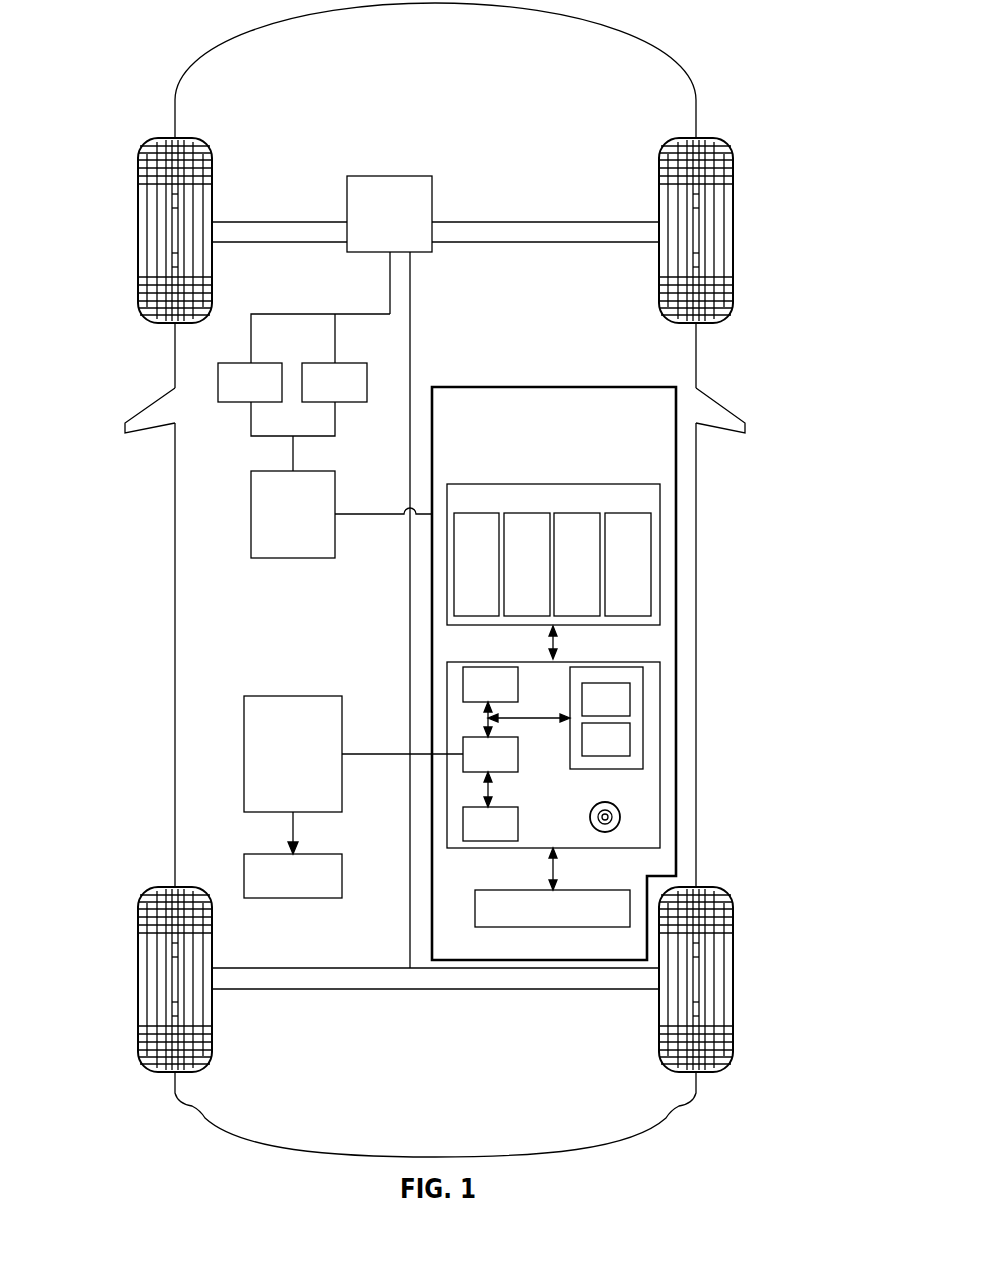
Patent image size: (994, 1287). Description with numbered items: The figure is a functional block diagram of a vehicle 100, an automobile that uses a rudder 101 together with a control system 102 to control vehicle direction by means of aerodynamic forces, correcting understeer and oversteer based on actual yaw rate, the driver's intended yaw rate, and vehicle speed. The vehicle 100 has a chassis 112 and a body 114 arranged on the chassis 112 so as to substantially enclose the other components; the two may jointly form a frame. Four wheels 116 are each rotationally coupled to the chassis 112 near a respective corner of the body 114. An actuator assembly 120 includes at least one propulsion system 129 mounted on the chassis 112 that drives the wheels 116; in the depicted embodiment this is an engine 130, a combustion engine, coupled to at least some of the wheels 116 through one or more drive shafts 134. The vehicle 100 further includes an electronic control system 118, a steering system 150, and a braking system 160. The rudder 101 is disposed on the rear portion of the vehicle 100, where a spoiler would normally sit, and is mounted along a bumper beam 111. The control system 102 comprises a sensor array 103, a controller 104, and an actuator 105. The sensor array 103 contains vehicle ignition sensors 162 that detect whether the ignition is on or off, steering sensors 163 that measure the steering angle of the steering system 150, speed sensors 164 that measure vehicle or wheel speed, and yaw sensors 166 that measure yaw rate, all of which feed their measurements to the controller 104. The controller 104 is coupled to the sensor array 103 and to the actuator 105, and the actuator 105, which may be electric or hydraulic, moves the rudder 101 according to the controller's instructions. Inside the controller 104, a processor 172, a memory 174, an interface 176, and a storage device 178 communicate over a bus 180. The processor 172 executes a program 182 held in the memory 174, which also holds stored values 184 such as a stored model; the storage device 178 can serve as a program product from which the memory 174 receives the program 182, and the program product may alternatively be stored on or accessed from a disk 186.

The vehicle 100 is at (749, 26).
The rudder 101 is at (253, 750).
The control system 102 is at (627, 386).
The sensor array 103 is at (553, 484).
The controller 104 is at (606, 662).
The actuator 105 is at (582, 890).
The bumper beam 111 is at (253, 877).
The chassis 112 is at (410, 913).
The body 114 is at (175, 588).
The wheels 116 is at (137, 233).
The electronic control system 118 is at (251, 514).
The actuator assembly 120 is at (436, 284).
The propulsion system 129 is at (415, 176).
The engine 130 is at (388, 209).
The drive shafts 134 is at (265, 244).
The steering system 150 is at (238, 363).
The braking system 160 is at (346, 363).
The vehicle ignition sensors 162 is at (478, 513).
The steering sensors 163 is at (578, 513).
The speed sensors 164 is at (527, 513).
The yaw sensors 166 is at (628, 513).
The processor 172 is at (470, 683).
The memory 174 is at (638, 675).
The interface 176 is at (470, 766).
The storage device 178 is at (470, 822).
The bus 180 is at (486, 718).
The program 182 is at (623, 700).
The stored values 184 is at (623, 740).
The disk 186 is at (621, 817).